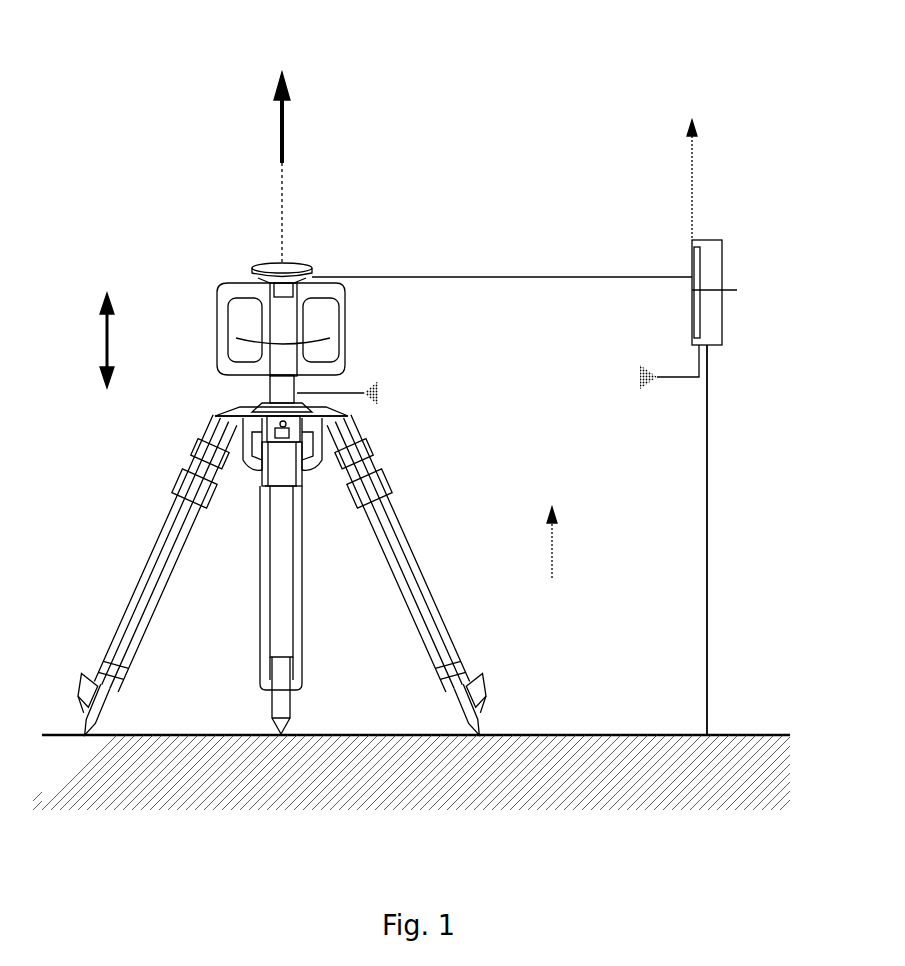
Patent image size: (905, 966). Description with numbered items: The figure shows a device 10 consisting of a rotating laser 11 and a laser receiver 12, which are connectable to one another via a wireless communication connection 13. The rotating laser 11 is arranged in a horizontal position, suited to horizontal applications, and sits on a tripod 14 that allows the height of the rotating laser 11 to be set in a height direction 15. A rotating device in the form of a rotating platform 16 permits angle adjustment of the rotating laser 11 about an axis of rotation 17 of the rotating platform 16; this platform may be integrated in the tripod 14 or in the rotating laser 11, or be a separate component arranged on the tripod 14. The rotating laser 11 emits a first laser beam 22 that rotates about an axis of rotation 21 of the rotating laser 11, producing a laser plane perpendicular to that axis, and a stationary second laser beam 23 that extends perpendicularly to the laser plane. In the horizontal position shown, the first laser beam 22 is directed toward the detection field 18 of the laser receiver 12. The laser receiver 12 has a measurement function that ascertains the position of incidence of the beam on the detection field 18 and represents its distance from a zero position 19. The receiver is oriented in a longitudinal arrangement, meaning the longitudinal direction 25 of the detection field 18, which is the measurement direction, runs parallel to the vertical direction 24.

The device 10 is at (140, 95).
The rotating laser 11 is at (252, 320).
The laser receiver 12 is at (722, 245).
The wireless communication connection 13 is at (384, 417).
The tripod 14 is at (246, 492).
The height direction 15 is at (100, 350).
The rotating platform 16 is at (230, 397).
The axis of rotation of the rotating platform 17 is at (280, 160).
The detection field 18 is at (690, 305).
The zero position 19 is at (737, 292).
The axis of rotation of the rotating laser 21 is at (284, 218).
The first laser beam 22 is at (492, 277).
The second laser beam 23 is at (284, 118).
The vertical direction 24 is at (550, 552).
The longitudinal direction 25 is at (697, 172).